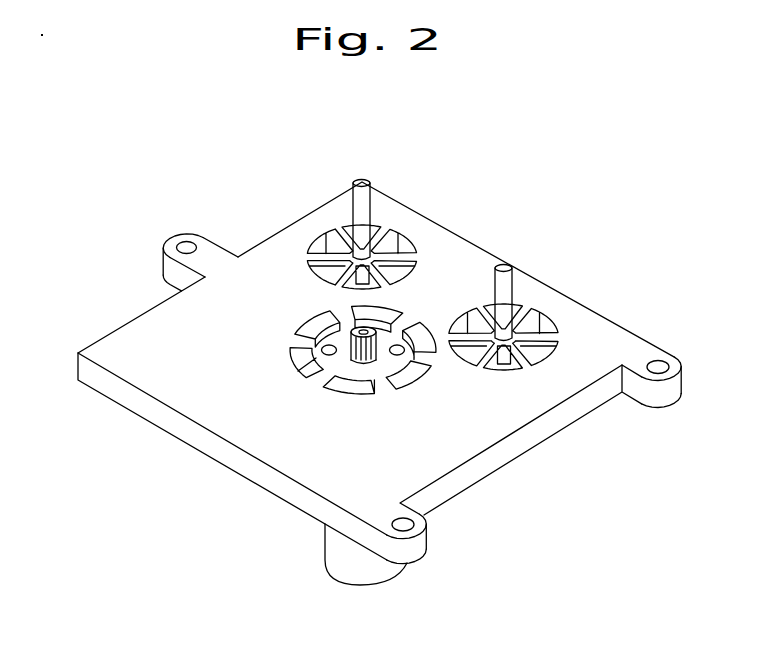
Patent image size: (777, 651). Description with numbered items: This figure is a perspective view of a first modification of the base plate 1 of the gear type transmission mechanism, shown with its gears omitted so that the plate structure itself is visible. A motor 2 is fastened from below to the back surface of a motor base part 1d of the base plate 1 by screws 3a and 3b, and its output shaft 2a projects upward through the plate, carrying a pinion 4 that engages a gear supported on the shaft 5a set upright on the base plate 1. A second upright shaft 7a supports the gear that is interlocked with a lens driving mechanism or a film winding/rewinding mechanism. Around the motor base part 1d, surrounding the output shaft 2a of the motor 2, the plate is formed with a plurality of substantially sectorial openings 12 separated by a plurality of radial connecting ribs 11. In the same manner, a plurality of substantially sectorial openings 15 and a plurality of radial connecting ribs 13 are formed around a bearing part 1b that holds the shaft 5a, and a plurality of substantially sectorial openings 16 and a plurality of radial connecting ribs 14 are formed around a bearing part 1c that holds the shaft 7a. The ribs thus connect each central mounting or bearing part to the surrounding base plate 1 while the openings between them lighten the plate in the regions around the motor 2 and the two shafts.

The base plate 1 is at (202, 383).
The motor 2 is at (350, 558).
The output shaft of the motor 2a is at (300, 317).
The screw 3a is at (300, 362).
The screw 3b is at (403, 355).
The pinion 4 is at (371, 363).
The shaft 5a is at (362, 183).
The shaft 7a is at (504, 268).
The radial connecting ribs 11 is at (321, 353).
The sectorial openings 12 is at (354, 386).
The radial connecting ribs 13 is at (322, 247).
The radial connecting ribs 14 is at (537, 348).
The sectorial openings 15 is at (325, 234).
The sectorial openings 16 is at (538, 346).
The bearing part 1b is at (405, 232).
The bearing part 1c is at (533, 317).
The motor base part 1d is at (385, 320).